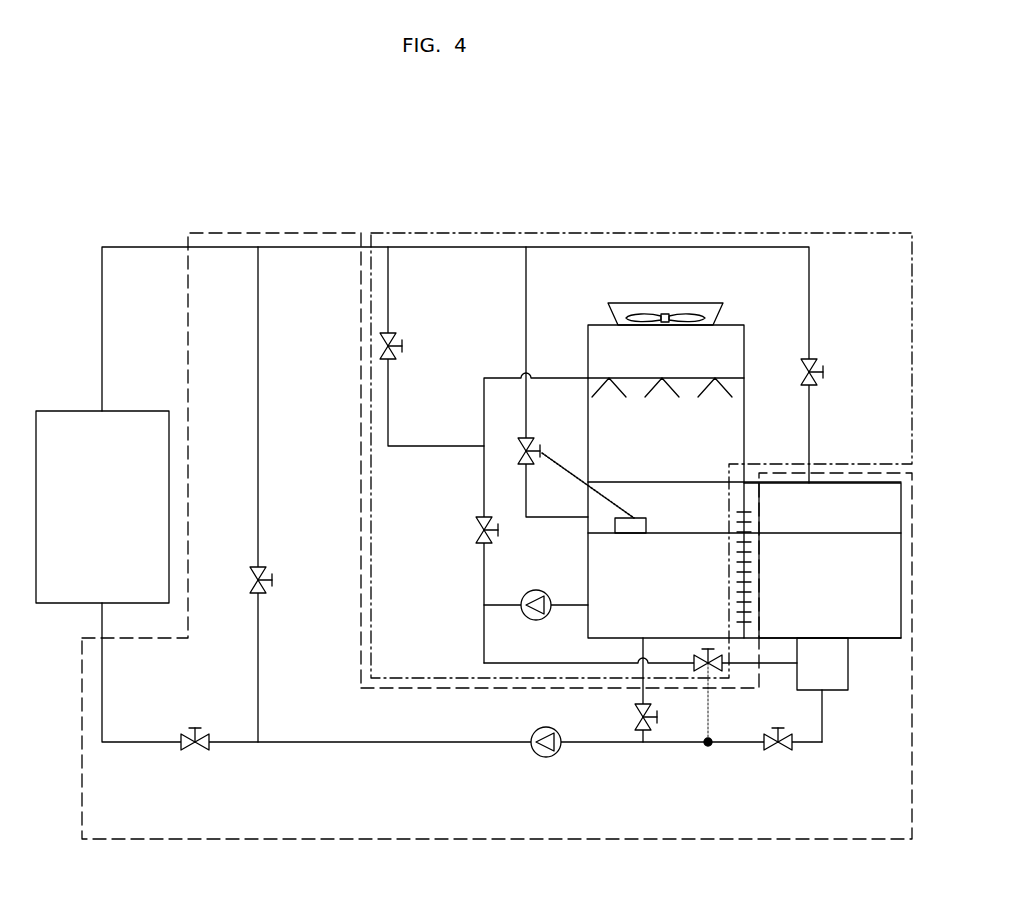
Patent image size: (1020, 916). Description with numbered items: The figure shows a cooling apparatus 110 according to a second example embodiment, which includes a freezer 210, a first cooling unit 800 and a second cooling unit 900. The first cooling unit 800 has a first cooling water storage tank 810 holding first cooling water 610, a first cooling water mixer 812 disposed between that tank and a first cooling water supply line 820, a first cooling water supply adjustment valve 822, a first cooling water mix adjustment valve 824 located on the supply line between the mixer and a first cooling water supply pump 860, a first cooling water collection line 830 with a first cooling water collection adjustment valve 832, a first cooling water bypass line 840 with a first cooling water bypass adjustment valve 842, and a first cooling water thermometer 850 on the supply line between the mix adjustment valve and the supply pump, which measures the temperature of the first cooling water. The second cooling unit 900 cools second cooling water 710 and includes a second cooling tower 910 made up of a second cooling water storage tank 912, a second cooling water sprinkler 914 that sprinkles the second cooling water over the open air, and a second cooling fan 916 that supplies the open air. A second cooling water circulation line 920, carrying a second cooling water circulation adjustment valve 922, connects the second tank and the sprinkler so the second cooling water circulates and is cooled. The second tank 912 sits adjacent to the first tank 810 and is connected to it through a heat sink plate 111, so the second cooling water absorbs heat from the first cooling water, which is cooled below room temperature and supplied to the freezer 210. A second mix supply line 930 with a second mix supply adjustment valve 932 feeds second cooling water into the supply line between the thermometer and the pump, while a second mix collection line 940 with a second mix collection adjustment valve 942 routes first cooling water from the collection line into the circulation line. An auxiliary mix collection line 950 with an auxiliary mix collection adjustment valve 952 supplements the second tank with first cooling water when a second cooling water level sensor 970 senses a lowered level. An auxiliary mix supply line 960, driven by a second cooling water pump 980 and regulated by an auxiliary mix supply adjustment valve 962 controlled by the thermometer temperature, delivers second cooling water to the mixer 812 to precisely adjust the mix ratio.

The cooling apparatus 110 is at (160, 171).
The freezer 210 is at (128, 411).
The first cooling unit 800 is at (516, 840).
The first cooling water storage tank 810 is at (880, 640).
The first cooling water mixer 812 is at (822, 693).
The first cooling water supply line 820 is at (313, 744).
The first cooling water supply adjustment valve 822 is at (197, 750).
The first cooling water mix adjustment valve 824 is at (780, 750).
The first cooling water collection line 830 is at (220, 249).
The first cooling water collection adjustment valve 832 is at (823, 372).
The first cooling water bypass line 840 is at (259, 625).
The first cooling water bypass adjustment valve 842 is at (272, 580).
The first cooling water thermometer 850 is at (708, 747).
The first cooling water supply pump 860 is at (546, 758).
The second cooling unit 900 is at (853, 233).
The second cooling tower 910 is at (646, 382).
The second cooling water storage tank 912 is at (587, 492).
The second cooling water sprinkler 914 is at (628, 378).
The second cooling fan 916 is at (673, 247).
The second cooling water circulation line 920 is at (484, 569).
The second cooling water circulation adjustment valve 922 is at (476, 531).
The second mix supply line 930 is at (643, 649).
The second mix supply adjustment valve 932 is at (635, 717).
The second mix collection line 940 is at (388, 409).
The second mix collection adjustment valve 942 is at (402, 346).
The auxiliary mix collection line 950 is at (526, 301).
The auxiliary mix collection adjustment valve 952 is at (520, 457).
The auxiliary mix supply line 960 is at (484, 632).
The auxiliary mix supply adjustment valve 962 is at (713, 670).
The second cooling water level sensor 970 is at (646, 517).
The second cooling water pump 980 is at (536, 590).
The second cooling water 710 is at (648, 571).
The first cooling water 610 is at (803, 572).
The heat sink plate 111 is at (748, 512).